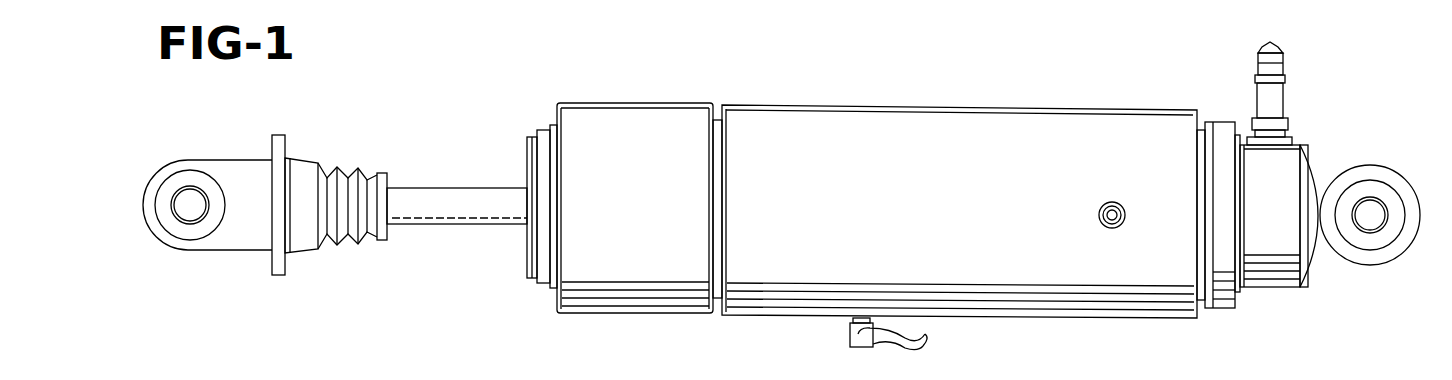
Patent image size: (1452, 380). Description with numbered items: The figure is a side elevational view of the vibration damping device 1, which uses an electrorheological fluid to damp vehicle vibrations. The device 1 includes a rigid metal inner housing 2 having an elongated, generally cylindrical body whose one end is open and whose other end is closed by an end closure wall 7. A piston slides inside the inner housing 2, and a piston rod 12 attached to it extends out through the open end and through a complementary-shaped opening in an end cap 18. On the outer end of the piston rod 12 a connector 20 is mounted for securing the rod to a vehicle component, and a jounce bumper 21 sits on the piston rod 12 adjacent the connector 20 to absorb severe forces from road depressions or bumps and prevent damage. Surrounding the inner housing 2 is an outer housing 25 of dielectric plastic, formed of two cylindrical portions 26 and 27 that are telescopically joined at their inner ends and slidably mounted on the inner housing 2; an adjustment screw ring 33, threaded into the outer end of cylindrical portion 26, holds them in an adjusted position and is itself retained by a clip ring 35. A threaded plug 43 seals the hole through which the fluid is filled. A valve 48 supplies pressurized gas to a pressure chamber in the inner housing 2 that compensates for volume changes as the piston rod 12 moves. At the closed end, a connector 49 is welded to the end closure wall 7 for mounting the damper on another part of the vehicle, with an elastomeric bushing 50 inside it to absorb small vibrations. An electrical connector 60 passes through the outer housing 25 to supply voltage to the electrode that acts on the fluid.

The vibration damping device 1 is at (1052, 92).
The inner housing 2 is at (1297, 296).
The end closure wall 7 is at (1318, 176).
The piston rod 12 is at (460, 198).
The end cap 18 is at (527, 265).
The connector 20 is at (238, 172).
The jounce bumper 21 is at (341, 166).
The outer housing 25 is at (964, 104).
The cylindrical portion 26 is at (793, 125).
The cylindrical portion 27 is at (641, 124).
The adjustment screw ring 33 is at (1220, 310).
The clip ring 35 is at (1236, 296).
The threaded plug 43 is at (1108, 227).
The valve 48 is at (1257, 100).
The connector 49 is at (1370, 170).
The elastomeric bushing 50 is at (1370, 246).
The electrical connector 60 is at (852, 348).